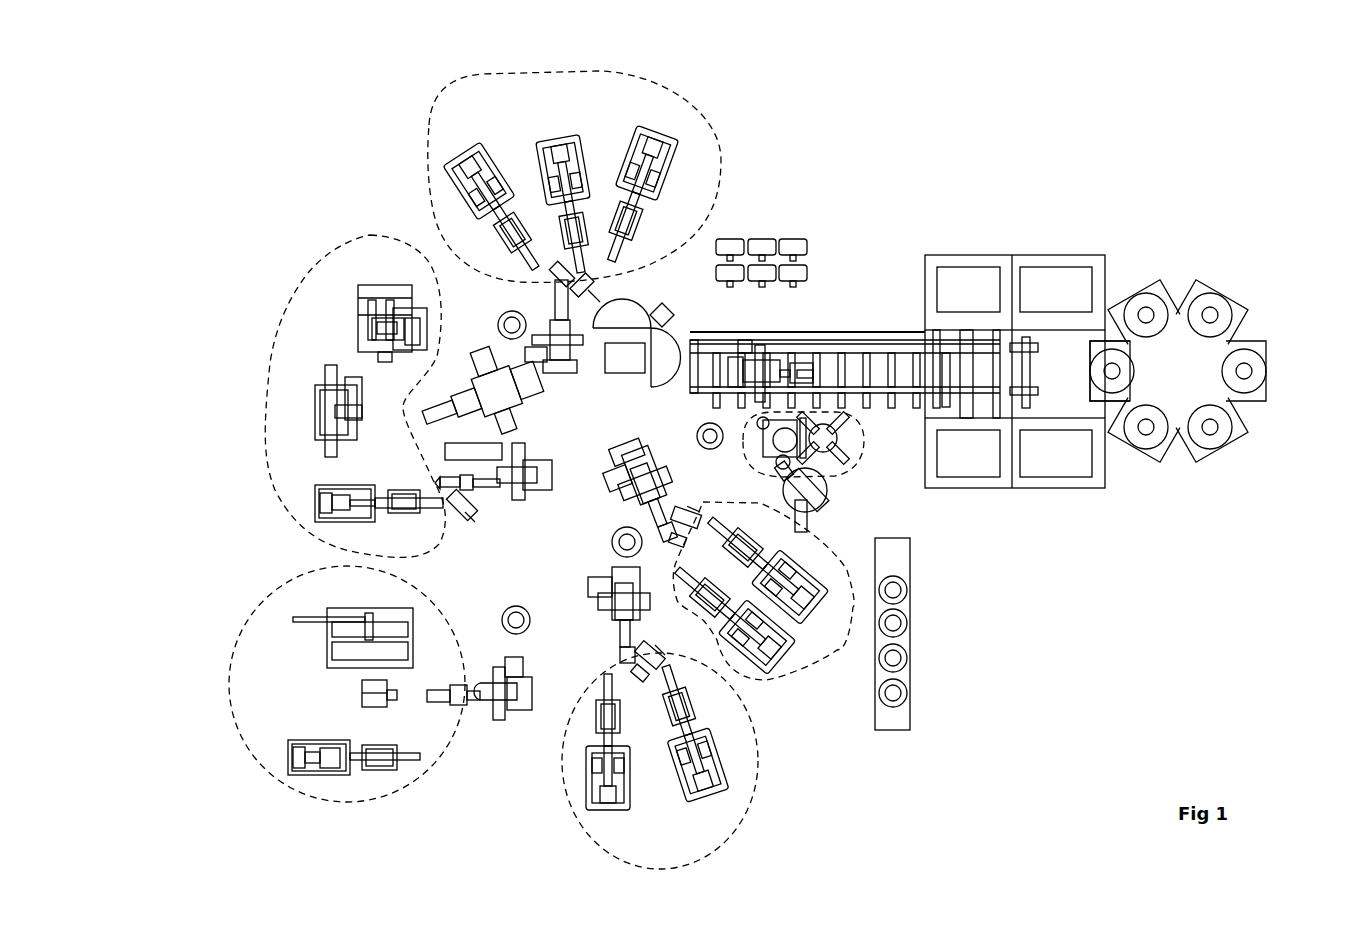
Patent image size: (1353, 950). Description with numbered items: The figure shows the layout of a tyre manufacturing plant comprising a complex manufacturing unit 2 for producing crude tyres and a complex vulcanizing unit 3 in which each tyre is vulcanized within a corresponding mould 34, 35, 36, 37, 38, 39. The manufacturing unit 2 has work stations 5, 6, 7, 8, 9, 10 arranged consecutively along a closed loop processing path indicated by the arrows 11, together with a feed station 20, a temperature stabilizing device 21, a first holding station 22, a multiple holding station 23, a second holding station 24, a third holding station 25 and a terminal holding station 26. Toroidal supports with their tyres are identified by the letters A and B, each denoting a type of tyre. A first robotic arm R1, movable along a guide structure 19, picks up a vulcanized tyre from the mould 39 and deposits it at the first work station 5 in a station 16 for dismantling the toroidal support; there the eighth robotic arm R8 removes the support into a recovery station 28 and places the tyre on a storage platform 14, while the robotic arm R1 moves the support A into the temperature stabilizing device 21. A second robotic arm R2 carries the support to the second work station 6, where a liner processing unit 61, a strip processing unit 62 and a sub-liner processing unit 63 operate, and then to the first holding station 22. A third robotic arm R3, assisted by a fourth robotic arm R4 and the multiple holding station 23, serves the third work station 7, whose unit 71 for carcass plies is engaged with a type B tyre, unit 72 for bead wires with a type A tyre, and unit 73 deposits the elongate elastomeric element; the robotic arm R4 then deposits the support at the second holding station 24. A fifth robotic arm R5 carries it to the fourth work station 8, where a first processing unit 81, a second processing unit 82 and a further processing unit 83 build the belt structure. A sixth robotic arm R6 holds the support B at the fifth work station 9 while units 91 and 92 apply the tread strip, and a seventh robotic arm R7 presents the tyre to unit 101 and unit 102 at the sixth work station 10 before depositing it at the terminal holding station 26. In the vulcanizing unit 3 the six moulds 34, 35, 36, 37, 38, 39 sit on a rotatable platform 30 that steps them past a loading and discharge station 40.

The complex manufacturing unit 2 is at (256, 150).
The complex vulcanizing unit 3 is at (993, 205).
The first work station 5 is at (845, 470).
The second work station 6 is at (420, 145).
The third work station 7 is at (290, 305).
The fourth work station 8 is at (383, 797).
The fifth work station 9 is at (683, 873).
The sixth work station 10 is at (828, 656).
The arrows 11 is at (365, 216).
The storage platform 14 is at (913, 655).
The station for dismantling the toroidal support 16 is at (825, 437).
The guide structure 19 is at (877, 332).
The feed station 20 is at (742, 240).
The temperature stabilizing device 21 is at (625, 310).
The first holding station 22 is at (512, 322).
The multiple holding station 23 is at (470, 448).
The second holding station 24 is at (522, 626).
The third holding station 25 is at (632, 548).
The terminal holding station 26 is at (691, 433).
The recovery station 28 is at (773, 444).
The rotatable platform 30 is at (1253, 340).
The vulcanizing mould 34 is at (1138, 430).
The vulcanizing mould 35 is at (1192, 455).
The vulcanizing mould 36 is at (1244, 372).
The vulcanizing mould 37 is at (1210, 314).
The vulcanizing mould 38 is at (1147, 316).
The vulcanizing mould 39 is at (1110, 370).
The loading and discharge station 40 is at (1077, 370).
The liner processing unit 61 is at (644, 148).
The strip processing unit 62 is at (558, 142).
The sub-liner processing unit 63 is at (468, 165).
The unit for depositing the carcass plies 71 is at (368, 292).
The unit for depositing the bead wires 72 is at (322, 395).
The unit for depositing the elongate elastomeric element 73 is at (320, 498).
The first processing unit 81 is at (328, 772).
The second processing unit 82 is at (332, 640).
The further processing unit 83 is at (360, 700).
The tread strip unit 91 is at (610, 805).
The tread strip unit 92 is at (715, 755).
The abrasion-resistant element unit 101 is at (786, 676).
The sidewall unit 102 is at (768, 610).
The first robotic arm R1 is at (770, 365).
The second robotic arm R2 is at (565, 378).
The third robotic arm R3 is at (500, 392).
The fourth robotic arm R4 is at (537, 488).
The fifth robotic arm R5 is at (468, 705).
The sixth robotic arm R6 is at (603, 577).
The seventh robotic arm R7 is at (660, 450).
The eighth robotic arm R8 is at (808, 495).
The toroidal support of type A tyre A is at (598, 285).
The toroidal support of type B tyre B is at (397, 330).